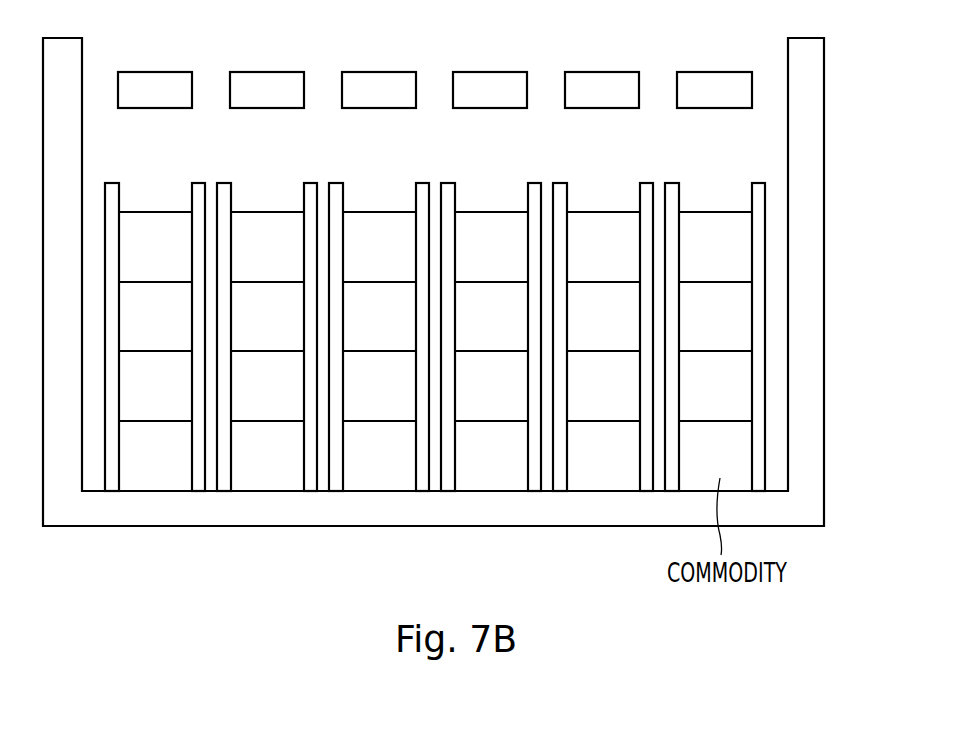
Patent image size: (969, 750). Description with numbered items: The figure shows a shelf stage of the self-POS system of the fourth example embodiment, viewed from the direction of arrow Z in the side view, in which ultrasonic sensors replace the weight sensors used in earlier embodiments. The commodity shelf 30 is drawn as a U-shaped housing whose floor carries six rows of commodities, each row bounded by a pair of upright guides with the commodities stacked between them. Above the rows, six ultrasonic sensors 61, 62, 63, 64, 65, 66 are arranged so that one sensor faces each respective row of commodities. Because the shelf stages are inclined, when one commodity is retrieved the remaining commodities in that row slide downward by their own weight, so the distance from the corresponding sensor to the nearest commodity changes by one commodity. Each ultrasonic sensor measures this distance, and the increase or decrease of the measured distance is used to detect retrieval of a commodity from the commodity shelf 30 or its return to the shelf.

The commodity shelf 30 is at (824, 287).
The ultrasonic sensor 61 is at (172, 72).
The ultrasonic sensor 62 is at (284, 72).
The ultrasonic sensor 63 is at (396, 72).
The ultrasonic sensor 64 is at (507, 72).
The ultrasonic sensor 65 is at (619, 72).
The ultrasonic sensor 66 is at (732, 72).